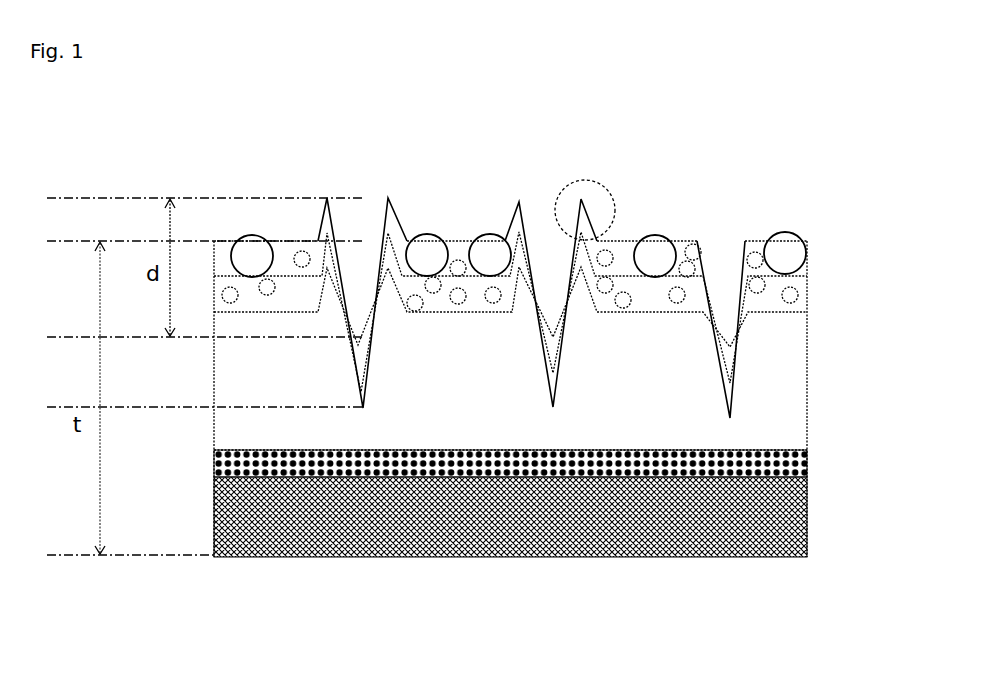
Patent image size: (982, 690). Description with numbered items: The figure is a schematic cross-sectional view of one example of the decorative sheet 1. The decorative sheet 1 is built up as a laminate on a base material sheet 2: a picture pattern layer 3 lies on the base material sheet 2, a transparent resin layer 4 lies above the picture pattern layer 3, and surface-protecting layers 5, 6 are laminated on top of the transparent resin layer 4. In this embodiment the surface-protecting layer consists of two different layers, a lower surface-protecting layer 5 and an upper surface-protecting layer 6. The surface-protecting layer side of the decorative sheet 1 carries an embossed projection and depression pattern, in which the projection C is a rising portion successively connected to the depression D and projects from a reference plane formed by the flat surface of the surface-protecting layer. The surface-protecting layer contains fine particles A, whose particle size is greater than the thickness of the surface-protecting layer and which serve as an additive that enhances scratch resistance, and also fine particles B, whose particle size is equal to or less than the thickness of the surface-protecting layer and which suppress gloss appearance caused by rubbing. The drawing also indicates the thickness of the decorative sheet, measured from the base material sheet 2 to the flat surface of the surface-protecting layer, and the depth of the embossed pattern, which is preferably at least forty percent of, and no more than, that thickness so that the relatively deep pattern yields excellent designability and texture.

The decorative sheet 1 is at (553, 582).
The base material sheet 2 is at (817, 512).
The picture pattern layer 3 is at (817, 467).
The transparent resin layer 4 is at (817, 380).
The surface-protecting layer (lower layer) 5 is at (817, 292).
The surface-protecting layer (upper layer) 6 is at (817, 252).
The fine particles A is at (433, 248).
The fine particles B is at (693, 245).
The projection of embossed projection and depression pattern C is at (583, 180).
The depression of embossed projection and depression pattern D is at (555, 258).